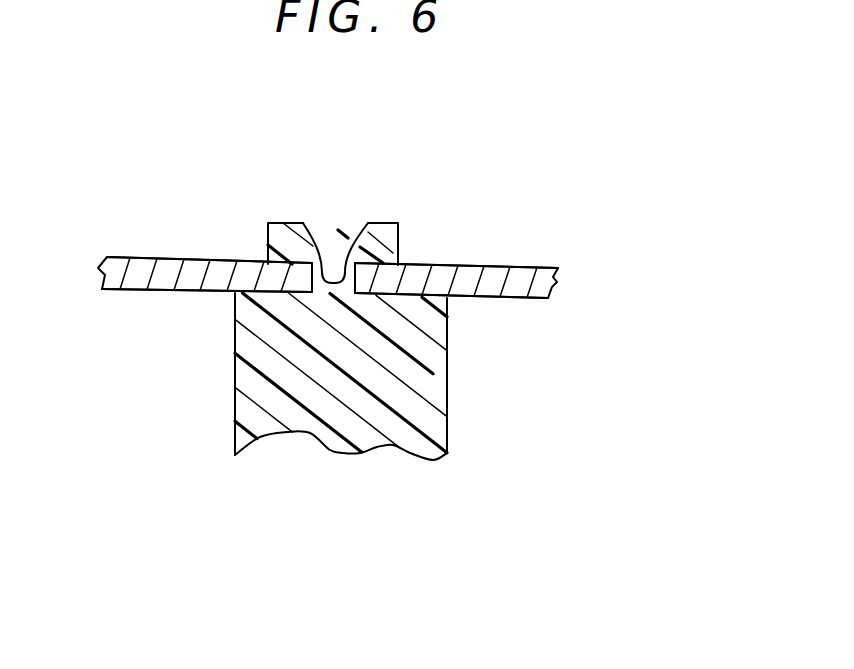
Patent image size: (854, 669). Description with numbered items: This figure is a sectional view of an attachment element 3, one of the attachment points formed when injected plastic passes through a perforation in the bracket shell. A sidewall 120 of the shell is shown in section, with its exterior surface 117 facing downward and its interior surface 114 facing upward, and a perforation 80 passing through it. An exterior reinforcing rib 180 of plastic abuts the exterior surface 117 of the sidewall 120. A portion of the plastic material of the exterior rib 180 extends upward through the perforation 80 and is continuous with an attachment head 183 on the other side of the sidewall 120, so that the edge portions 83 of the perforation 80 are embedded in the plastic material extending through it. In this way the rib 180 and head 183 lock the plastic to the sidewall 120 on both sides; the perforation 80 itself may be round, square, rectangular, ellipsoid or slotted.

The attachment element 3 is at (185, 440).
The perforation 80 is at (396, 265).
The edge portions 83 is at (303, 222).
The interior surface 114 is at (140, 259).
The exterior surface 117 is at (197, 294).
The sidewall 120 is at (187, 268).
The exterior reinforcing rib 180 is at (430, 385).
The attachment head 183 is at (352, 219).